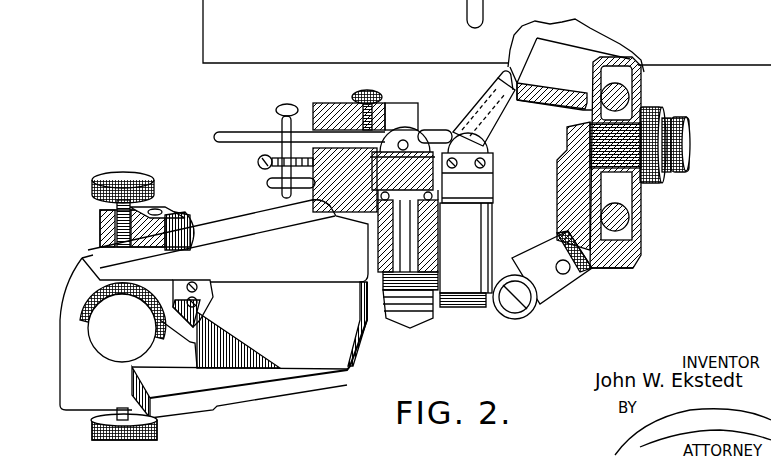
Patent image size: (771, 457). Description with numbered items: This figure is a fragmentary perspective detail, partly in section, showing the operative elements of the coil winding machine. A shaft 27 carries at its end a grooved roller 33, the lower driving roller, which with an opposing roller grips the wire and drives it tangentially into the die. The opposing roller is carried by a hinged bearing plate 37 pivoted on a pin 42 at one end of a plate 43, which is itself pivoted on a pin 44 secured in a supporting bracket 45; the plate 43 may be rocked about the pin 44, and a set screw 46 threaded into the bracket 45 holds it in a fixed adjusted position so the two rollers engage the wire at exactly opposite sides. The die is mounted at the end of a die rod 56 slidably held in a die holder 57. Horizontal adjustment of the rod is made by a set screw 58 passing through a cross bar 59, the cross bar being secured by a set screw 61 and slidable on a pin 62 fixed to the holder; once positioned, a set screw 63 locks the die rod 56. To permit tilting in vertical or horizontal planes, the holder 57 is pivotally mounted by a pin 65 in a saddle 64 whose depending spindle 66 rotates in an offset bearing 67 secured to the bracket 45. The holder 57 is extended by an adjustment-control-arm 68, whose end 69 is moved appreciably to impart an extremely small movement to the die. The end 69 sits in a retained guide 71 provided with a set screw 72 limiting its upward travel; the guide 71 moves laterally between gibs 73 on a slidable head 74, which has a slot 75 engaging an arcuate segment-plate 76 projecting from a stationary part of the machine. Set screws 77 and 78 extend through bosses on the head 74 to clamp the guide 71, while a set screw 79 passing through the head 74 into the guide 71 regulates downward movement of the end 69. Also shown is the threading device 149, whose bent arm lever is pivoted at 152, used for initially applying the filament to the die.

The shaft 27 is at (507, 82).
The grooved roller 33 is at (472, 146).
The hinged bearing plate 37 is at (563, 63).
The pin 42 is at (618, 97).
The plate 43 is at (632, 187).
The pin 44 is at (633, 222).
The supporting bracket 45 is at (587, 267).
The set screw 46 is at (686, 140).
The die rod 56 is at (245, 132).
The die holder 57 is at (327, 103).
The set screw 58 is at (258, 163).
The cross bar 59 is at (267, 185).
The set screw 61 is at (290, 104).
The pin 62 is at (310, 203).
The set screw 63 is at (377, 92).
The saddle 64 is at (427, 135).
The pin 65 is at (403, 150).
The depending spindle 66 is at (400, 260).
The offset bearing 67 is at (440, 290).
The adjustment-control-arm 68 is at (287, 272).
The end of adjustment-control-arm 69 is at (93, 255).
The retained guide 71 is at (170, 213).
The set screw 72 is at (115, 175).
The guide plates or gibs 73 is at (213, 295).
The slidable head 74 is at (87, 400).
The slot 75 is at (132, 373).
The arcuate segment-plate 76 is at (298, 385).
The set screw 77 is at (185, 235).
The set screw 78 is at (147, 337).
The set screw 79 is at (157, 435).
The threading device 149 is at (567, 280).
The pivot 152 is at (528, 307).